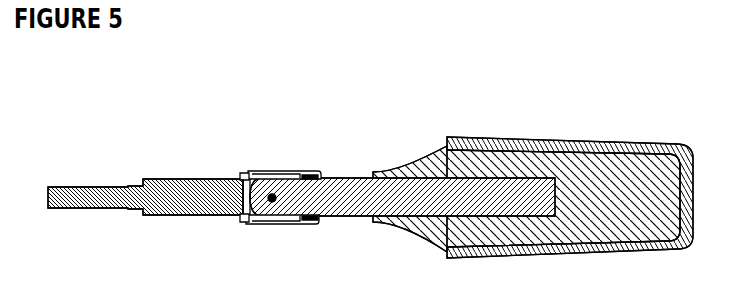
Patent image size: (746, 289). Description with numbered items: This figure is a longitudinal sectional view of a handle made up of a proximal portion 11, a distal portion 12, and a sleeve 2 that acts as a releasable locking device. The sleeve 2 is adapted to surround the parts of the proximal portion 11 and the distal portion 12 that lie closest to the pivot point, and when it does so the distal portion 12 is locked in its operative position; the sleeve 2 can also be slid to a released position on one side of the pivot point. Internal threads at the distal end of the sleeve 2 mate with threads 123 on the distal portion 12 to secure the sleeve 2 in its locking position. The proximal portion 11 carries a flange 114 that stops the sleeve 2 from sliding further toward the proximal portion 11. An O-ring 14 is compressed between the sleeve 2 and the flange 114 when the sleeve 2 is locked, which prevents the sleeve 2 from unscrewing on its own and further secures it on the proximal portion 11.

The proximal portion 11 is at (150, 181).
The distal portion 12 is at (358, 179).
The sleeve 2 is at (300, 191).
The O-ring 14 is at (219, 191).
The flange 114 is at (240, 223).
The threads 123 is at (313, 223).